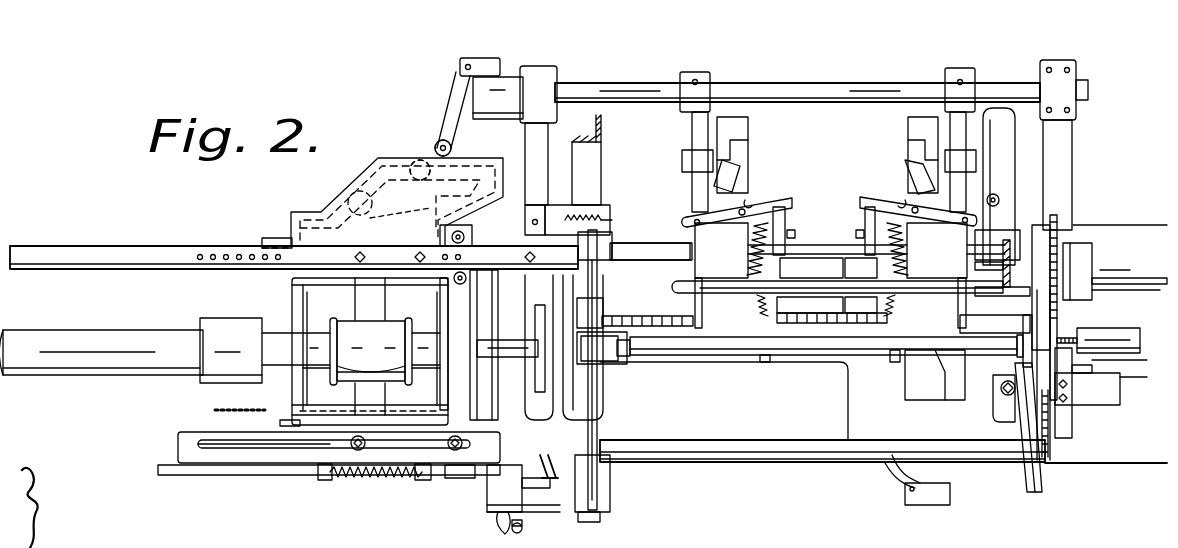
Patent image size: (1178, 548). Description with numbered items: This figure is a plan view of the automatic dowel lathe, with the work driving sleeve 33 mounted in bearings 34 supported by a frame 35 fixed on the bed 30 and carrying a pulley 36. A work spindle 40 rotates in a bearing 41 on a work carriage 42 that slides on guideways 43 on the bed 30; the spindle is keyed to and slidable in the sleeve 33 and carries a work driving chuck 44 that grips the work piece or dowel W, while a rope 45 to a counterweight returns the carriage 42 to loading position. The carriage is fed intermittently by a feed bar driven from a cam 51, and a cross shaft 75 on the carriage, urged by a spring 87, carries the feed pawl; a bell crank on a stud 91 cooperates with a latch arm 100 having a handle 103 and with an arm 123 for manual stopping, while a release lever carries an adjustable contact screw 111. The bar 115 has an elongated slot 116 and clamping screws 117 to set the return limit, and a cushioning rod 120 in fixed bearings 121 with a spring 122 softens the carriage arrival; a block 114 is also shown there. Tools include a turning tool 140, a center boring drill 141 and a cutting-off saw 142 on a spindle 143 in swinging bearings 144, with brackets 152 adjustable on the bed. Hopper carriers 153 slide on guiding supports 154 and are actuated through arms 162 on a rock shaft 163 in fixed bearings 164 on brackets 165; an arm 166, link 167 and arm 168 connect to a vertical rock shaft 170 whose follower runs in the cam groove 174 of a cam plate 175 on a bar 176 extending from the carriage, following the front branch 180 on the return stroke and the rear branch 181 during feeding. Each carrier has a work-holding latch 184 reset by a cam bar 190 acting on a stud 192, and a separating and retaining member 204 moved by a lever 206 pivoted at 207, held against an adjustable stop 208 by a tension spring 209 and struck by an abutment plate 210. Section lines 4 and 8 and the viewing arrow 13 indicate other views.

The section line 4- 4 is at (627, 84).
The section line 8- 8 is at (808, 84).
The view direction arrow 13 is at (1002, 486).
The bed 30 is at (890, 425).
The work driving sleeve 33 is at (315, 330).
The bearings 34 is at (268, 312).
The frame 35 is at (280, 422).
The pulley 36 is at (352, 374).
The work spindle 40 is at (510, 340).
The bearing 41 is at (548, 372).
The work carriage 42 is at (592, 424).
The guideways 43 is at (648, 258).
The work driving chuck 44 is at (618, 364).
The rope 45 is at (237, 400).
The cam 51 is at (940, 396).
The cross shaft 75 is at (598, 294).
The spring 87 is at (586, 214).
The stud 91 is at (542, 520).
The latch arm 100 is at (494, 506).
The handle 103 is at (500, 536).
The adjustable contact screw 111 is at (910, 490).
The block 114 is at (460, 472).
The bar 115 is at (182, 448).
The elongated slot 116 is at (216, 448).
The clamping screws 117 is at (356, 446).
The cushioning rod 120 is at (270, 474).
The fixed bearings 121 is at (326, 480).
The spring 122 is at (384, 478).
The arm 123 is at (546, 460).
The turning tool 140 is at (1042, 488).
The center boring drill 141 is at (1066, 338).
The cutting-off saw 142 is at (1055, 226).
The spindle 143 is at (1112, 268).
The swinging bearings 144 is at (1090, 252).
The brackets 152 is at (598, 152).
The carriers 153 is at (696, 232).
The guiding supports 154 is at (738, 160).
The arm 162 is at (690, 128).
The rock shaft 163 is at (870, 90).
The fixed bearings 164 is at (538, 70).
The brackets 165 is at (526, 145).
The arm 166 is at (486, 58).
The link 167 is at (450, 93).
The arm 168 is at (436, 150).
The rock shaft 170 is at (356, 198).
The cam groove 174 is at (288, 222).
The cam plate 175 is at (294, 212).
The bar 176 is at (120, 258).
The front branch 180 is at (440, 204).
The rear branch 181 is at (424, 176).
The work-holding latch 184 is at (768, 364).
The cam bar 190 is at (828, 268).
The stud 192 is at (832, 310).
The separating and retaining member 204 is at (698, 268).
The lever 206 is at (858, 203).
The pivot 207 is at (746, 204).
The adjustable stop 208 is at (742, 160).
The tension spring 209 is at (760, 230).
The abutment plate 210 is at (868, 222).
The work piece or dowel W is at (730, 290).